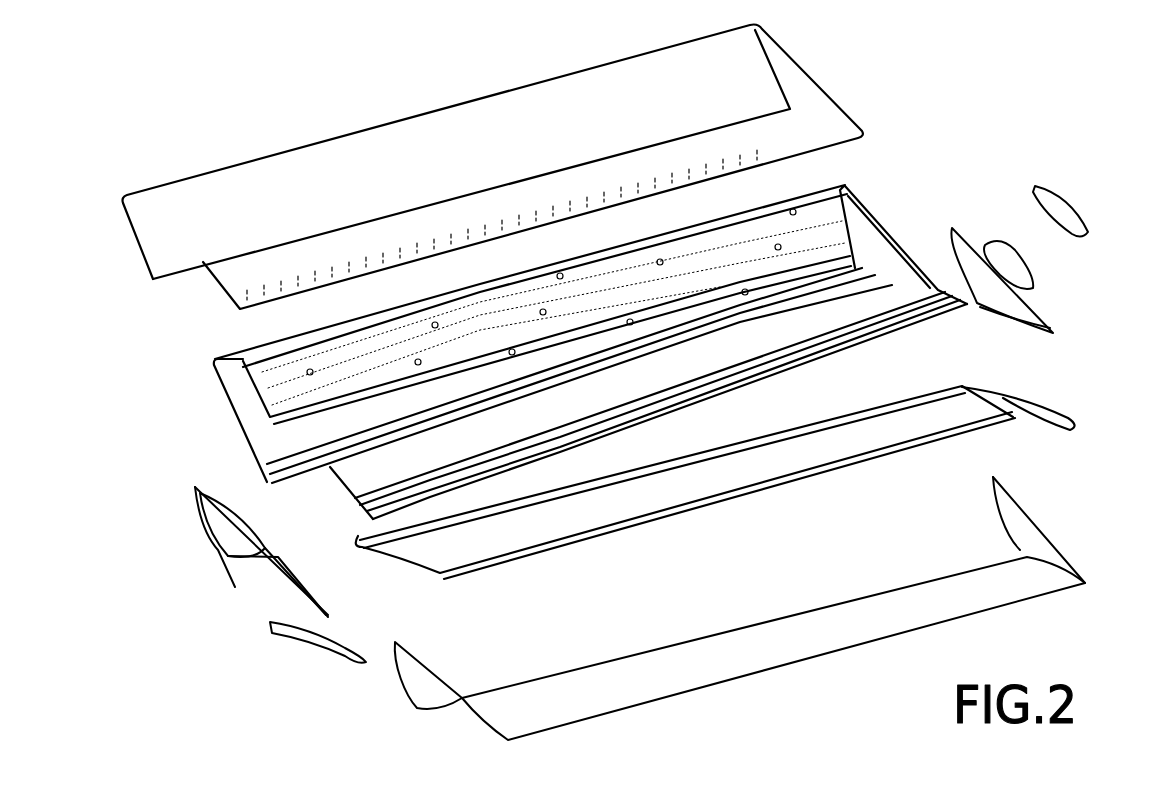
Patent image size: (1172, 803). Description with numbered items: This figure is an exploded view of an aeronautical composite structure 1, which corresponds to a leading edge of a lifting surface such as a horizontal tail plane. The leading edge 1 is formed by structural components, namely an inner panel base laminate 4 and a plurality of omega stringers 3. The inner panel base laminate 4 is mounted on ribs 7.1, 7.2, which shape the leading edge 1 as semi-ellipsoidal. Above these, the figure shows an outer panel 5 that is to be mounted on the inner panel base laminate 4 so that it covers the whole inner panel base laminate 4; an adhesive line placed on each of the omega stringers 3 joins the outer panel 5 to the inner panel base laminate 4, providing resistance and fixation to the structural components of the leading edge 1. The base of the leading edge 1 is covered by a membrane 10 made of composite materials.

The aeronautical composite structure 1 is at (177, 71).
The stringers 3 is at (247, 343).
The inner panel base laminate 4 is at (262, 438).
The outer panel 5 is at (540, 98).
The rib 7.1 is at (397, 684).
The rib 7.2 is at (1030, 303).
The membrane 10 is at (965, 402).